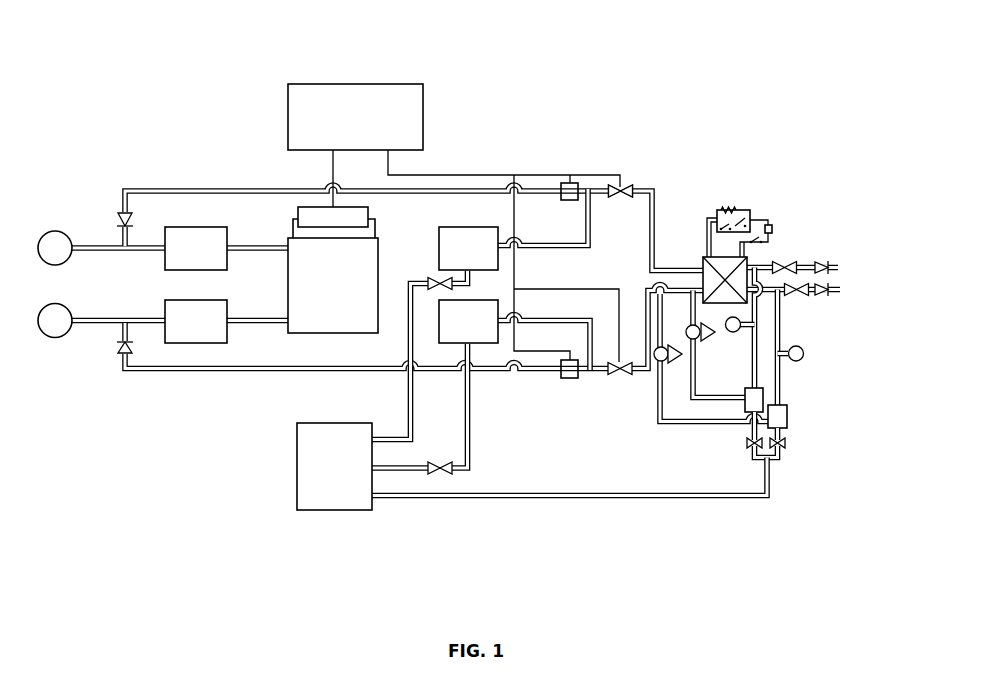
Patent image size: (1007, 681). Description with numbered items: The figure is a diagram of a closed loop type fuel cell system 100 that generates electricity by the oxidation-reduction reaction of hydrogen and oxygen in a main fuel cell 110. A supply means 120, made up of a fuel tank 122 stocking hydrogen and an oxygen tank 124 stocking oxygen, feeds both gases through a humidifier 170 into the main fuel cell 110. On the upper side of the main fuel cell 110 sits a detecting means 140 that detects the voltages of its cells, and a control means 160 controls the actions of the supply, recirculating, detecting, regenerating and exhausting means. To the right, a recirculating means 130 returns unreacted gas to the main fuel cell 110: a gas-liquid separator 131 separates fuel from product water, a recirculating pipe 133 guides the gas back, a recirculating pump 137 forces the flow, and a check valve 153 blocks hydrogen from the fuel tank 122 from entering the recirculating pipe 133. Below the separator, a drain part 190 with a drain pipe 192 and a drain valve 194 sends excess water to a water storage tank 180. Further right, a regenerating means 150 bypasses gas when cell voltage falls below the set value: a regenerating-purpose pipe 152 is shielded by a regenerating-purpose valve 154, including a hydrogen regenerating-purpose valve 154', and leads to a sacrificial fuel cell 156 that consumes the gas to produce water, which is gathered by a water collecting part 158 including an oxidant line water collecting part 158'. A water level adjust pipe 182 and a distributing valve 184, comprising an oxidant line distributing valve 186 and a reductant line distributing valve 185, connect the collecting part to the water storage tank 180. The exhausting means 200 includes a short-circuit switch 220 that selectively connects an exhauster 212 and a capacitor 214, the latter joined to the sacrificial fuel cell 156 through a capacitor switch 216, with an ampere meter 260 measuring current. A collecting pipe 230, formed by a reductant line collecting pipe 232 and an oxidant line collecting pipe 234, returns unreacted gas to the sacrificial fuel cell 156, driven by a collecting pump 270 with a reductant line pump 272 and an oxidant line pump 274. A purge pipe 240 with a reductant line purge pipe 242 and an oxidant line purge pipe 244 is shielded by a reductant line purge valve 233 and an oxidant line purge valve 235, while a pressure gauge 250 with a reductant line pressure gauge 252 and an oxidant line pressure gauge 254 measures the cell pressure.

The closed loop type fuel cell system 100 is at (221, 100).
The main fuel cell 110 is at (292, 330).
The supply means 120 is at (108, 263).
The fuel tank 122 is at (60, 265).
The oxygen tank 124 is at (60, 303).
The recirculating means 130 is at (492, 137).
The gas-liquid separator 131 is at (497, 226).
The recirculating pipe 133 is at (594, 214).
The recirculating pump 137 is at (566, 182).
The detecting means 140 is at (297, 214).
The regenerating means 150 is at (643, 127).
The regenerating-purpose pipe 152 is at (653, 200).
The check valve 153 is at (122, 217).
The regenerating-purpose valve 154 is at (635, 250).
The hydrogen regenerating-purpose valve 154' is at (602, 226).
The sacrificial fuel cell 156 is at (703, 262).
The water collecting part 158 is at (846, 275).
The oxidant line water collecting part 158' is at (789, 340).
The control means 160 is at (357, 89).
The humidifier 170 is at (222, 262).
The water storage tank 180 is at (303, 471).
The water level adjust pipe 182 is at (603, 499).
The distributing valve 184 is at (854, 436).
The reductant line distributing valve 185 is at (790, 443).
The oxidant line distributing valve 186 is at (770, 475).
The drain part 190 is at (480, 400).
The drain pipe 192 is at (470, 275).
The drain valve 194 is at (447, 292).
The exhausting means 200 is at (738, 203).
The exhauster 212 is at (719, 209).
The capacitor 214 is at (714, 235).
The capacitor switch 216 is at (746, 221).
The short-circuit switch 220 is at (755, 243).
The collecting pipe 230 is at (615, 427).
The reductant line collecting pipe 232 is at (658, 417).
The reductant line purge valve 233 is at (819, 296).
The oxidant line collecting pipe 234 is at (693, 399).
The oxidant line purge valve 235 is at (823, 262).
The purge pipe 240 is at (881, 258).
The reductant line purge pipe 242 is at (841, 290).
The oxidant line purge pipe 244 is at (838, 268).
The pressure gauge 250 is at (850, 317).
The reductant line pressure gauge 252 is at (804, 355).
The oxidant line pressure gauge 254 is at (740, 330).
The ampere meter 260 is at (772, 231).
The collecting pump 270 is at (615, 382).
The reductant line pump 272 is at (665, 366).
The oxidant line pump 274 is at (700, 341).